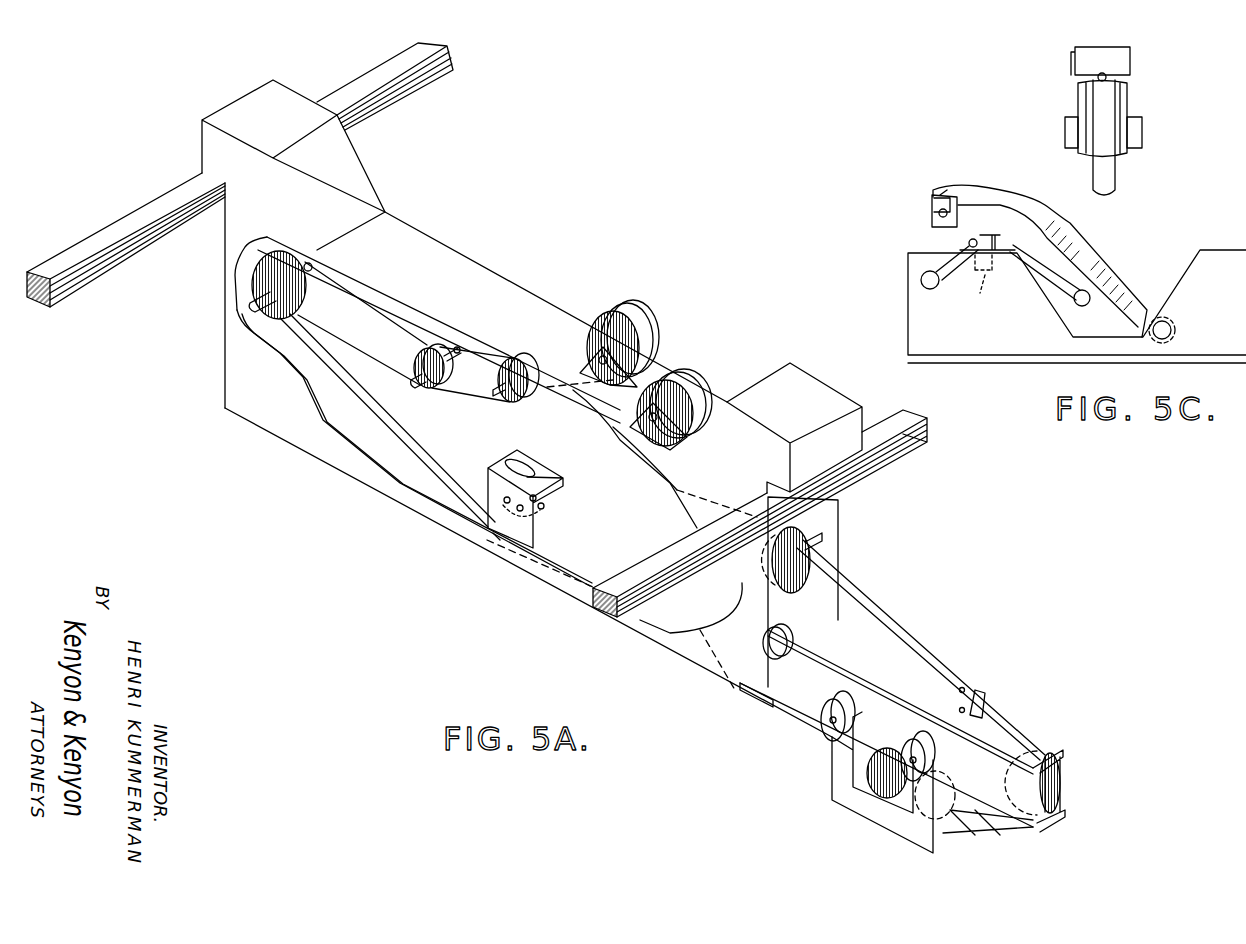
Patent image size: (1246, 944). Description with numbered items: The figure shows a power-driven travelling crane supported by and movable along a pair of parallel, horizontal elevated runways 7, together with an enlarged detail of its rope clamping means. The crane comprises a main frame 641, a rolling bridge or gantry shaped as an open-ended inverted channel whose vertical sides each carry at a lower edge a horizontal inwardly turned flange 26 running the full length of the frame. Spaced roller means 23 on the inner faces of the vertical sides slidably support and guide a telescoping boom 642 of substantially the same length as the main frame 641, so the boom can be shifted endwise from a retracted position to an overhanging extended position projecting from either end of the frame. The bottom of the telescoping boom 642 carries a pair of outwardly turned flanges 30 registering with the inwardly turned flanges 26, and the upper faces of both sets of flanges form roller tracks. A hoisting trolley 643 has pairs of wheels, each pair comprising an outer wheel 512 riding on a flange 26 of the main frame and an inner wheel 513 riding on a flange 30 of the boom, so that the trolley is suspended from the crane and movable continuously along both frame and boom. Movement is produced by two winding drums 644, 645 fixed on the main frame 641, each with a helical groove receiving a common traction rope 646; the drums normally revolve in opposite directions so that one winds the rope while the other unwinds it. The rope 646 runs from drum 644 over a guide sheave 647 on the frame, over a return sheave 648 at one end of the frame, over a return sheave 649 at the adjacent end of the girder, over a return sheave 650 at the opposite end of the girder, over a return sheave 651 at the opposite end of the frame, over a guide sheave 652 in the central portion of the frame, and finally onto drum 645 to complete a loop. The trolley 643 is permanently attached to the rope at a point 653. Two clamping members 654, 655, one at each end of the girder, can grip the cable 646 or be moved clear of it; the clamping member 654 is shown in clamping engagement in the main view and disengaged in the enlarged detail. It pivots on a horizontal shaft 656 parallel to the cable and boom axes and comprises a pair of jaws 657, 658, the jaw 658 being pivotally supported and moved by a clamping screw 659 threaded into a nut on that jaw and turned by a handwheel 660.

In FIG. 5A, the elevated runways 7 is at (97, 232).
In FIG. 5C, the elevated runways 7 is at (1125, 60).
In FIG. 5A, the roller means 23 is at (788, 655).
In FIG. 5A, the inwardly turned flange 26 is at (363, 408).
In FIG. 5A, the outwardly turned flanges 30 is at (500, 540).
In FIG. 5A, the outer wheel 512 is at (827, 727).
In FIG. 5A, the inner wheel 513 is at (860, 705).
In FIG. 5A, the main frame 641 is at (415, 238).
In FIG. 5A, the telescoping boom 642 is at (917, 670).
In FIG. 5A, the hoisting trolley 643 is at (873, 813).
In FIG. 5A, the winding drum 644 is at (637, 312).
In FIG. 5A, the winding drum 645 is at (687, 362).
In FIG. 5A, the traction rope 646 is at (892, 617).
In FIG. 5C, the traction rope 646 is at (1090, 80).
In FIG. 5A, the guide sheave 647 is at (556, 356).
In FIG. 5A, the return sheave 648 is at (260, 265).
In FIG. 5A, the return sheave 649 is at (513, 437).
In FIG. 5A, the return sheave 650 is at (1052, 783).
In FIG. 5A, the return sheave 651 is at (807, 573).
In FIG. 5C, the return sheave 651 is at (1103, 102).
In FIG. 5A, the guide sheave 652 is at (413, 360).
In FIG. 5A, the attachment point 653 is at (953, 823).
In FIG. 5A, the clamping member 654 is at (540, 492).
In FIG. 5C, the clamping member 654 is at (1124, 262).
In FIG. 5A, the clamping member 655 is at (983, 693).
In FIG. 5C, the horizontal shaft 656 is at (1173, 318).
In FIG. 5C, the jaw 657 is at (932, 222).
In FIG. 5C, the jaw 658 is at (950, 178).
In FIG. 5C, the clamping screw 659 is at (983, 287).
In FIG. 5C, the handwheel 660 is at (921, 280).